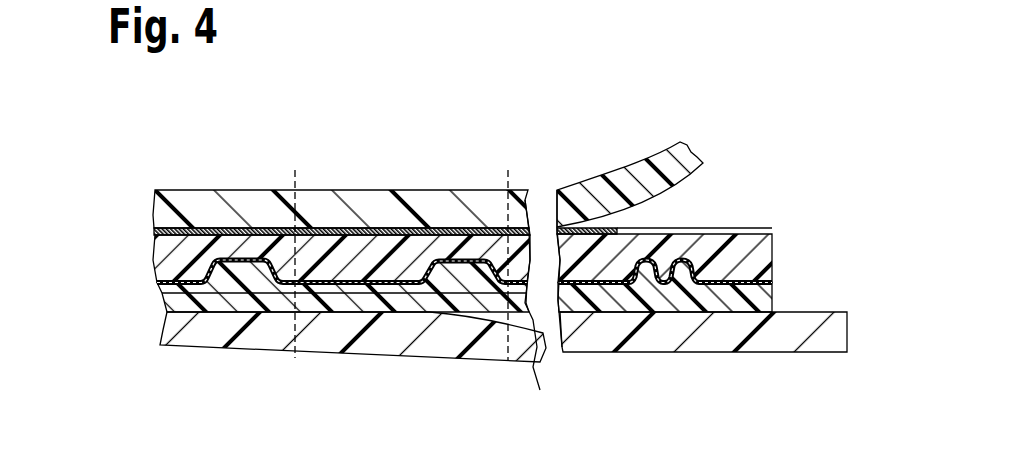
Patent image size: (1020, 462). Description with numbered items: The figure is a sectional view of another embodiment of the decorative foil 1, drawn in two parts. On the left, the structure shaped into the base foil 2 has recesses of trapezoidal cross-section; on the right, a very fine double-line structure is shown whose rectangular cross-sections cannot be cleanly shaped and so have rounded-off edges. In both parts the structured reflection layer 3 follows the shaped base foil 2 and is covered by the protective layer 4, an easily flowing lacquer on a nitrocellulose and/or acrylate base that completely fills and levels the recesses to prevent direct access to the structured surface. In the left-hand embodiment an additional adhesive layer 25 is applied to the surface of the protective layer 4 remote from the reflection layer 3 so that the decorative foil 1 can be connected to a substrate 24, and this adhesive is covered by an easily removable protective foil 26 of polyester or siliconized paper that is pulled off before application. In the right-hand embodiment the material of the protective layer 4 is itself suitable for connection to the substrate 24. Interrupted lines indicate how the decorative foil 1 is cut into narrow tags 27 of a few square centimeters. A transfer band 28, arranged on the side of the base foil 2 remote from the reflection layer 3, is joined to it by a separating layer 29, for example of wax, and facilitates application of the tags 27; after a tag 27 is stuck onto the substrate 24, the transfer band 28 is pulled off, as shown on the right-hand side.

The decorative foil 1 is at (142, 230).
The base foil 2 is at (717, 240).
The structured reflection layer 3 is at (737, 263).
The protective layer 4 is at (572, 355).
The substrate 24 is at (760, 270).
The adhesive layer 25 is at (228, 302).
The protective foil 26 is at (397, 330).
The tag 27 is at (295, 176).
The transfer band 28 is at (587, 208).
The separating layer 29 is at (232, 228).